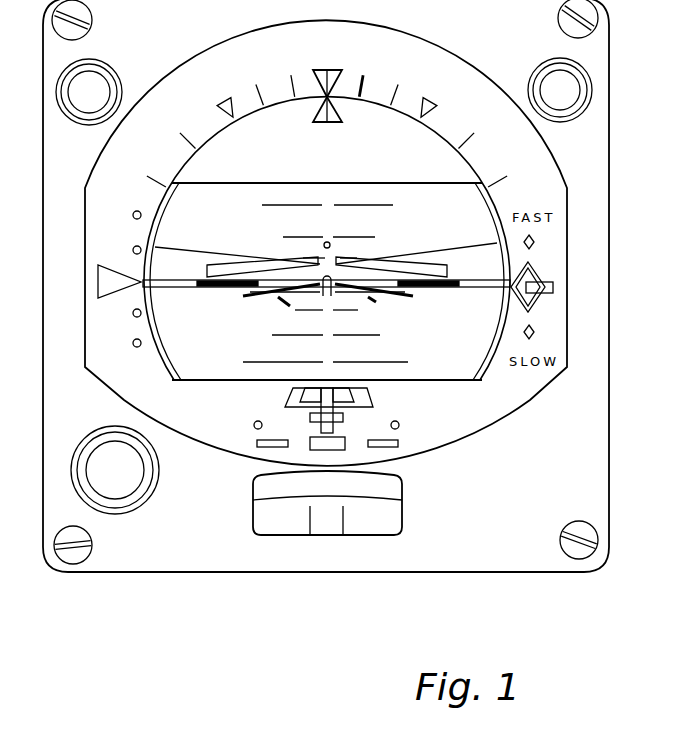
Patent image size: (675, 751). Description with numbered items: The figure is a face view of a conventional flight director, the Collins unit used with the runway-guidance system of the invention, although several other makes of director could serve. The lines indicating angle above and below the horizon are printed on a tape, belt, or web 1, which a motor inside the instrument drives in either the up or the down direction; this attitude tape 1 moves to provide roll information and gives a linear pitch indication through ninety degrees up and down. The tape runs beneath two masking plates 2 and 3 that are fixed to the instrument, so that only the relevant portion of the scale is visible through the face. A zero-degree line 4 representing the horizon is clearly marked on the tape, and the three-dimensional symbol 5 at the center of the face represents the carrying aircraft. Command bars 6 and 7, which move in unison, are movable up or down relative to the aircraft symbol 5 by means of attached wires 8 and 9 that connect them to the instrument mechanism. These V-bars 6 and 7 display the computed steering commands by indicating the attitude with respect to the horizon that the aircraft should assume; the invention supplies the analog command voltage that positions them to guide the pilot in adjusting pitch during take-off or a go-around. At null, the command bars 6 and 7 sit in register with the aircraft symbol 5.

The tape 1 is at (327, 238).
The masking plate 2 is at (327, 128).
The masking plate 3 is at (345, 416).
The 0° line 4 is at (173, 288).
The aircraft symbol 5 is at (356, 290).
The command bar 6 is at (274, 264).
The command bar 7 is at (382, 263).
The wire 8 is at (216, 256).
The wire 9 is at (446, 252).